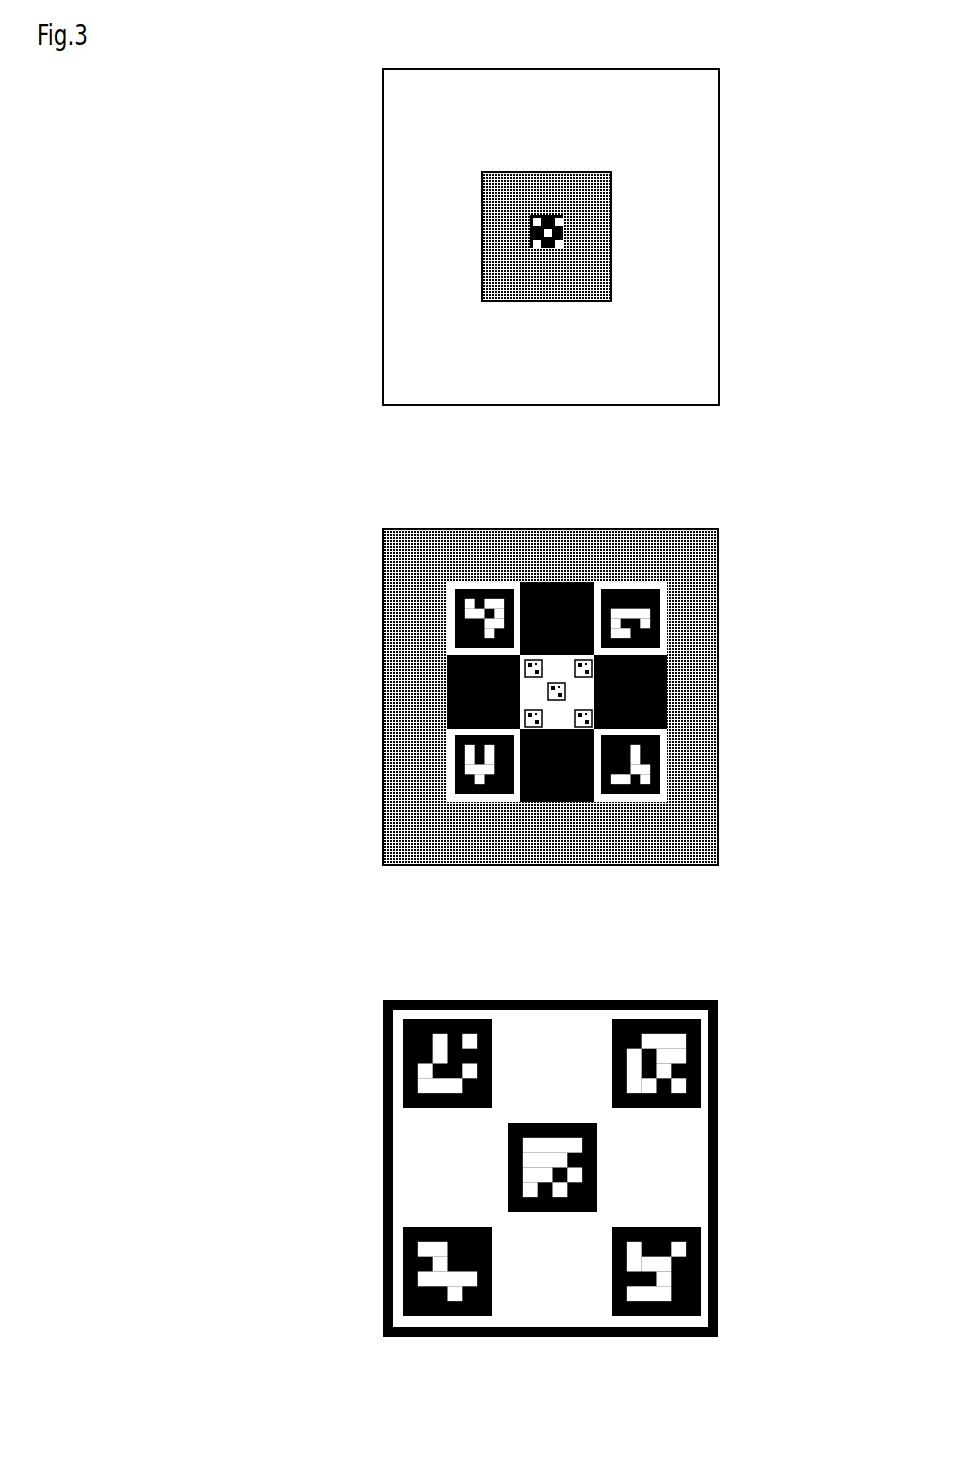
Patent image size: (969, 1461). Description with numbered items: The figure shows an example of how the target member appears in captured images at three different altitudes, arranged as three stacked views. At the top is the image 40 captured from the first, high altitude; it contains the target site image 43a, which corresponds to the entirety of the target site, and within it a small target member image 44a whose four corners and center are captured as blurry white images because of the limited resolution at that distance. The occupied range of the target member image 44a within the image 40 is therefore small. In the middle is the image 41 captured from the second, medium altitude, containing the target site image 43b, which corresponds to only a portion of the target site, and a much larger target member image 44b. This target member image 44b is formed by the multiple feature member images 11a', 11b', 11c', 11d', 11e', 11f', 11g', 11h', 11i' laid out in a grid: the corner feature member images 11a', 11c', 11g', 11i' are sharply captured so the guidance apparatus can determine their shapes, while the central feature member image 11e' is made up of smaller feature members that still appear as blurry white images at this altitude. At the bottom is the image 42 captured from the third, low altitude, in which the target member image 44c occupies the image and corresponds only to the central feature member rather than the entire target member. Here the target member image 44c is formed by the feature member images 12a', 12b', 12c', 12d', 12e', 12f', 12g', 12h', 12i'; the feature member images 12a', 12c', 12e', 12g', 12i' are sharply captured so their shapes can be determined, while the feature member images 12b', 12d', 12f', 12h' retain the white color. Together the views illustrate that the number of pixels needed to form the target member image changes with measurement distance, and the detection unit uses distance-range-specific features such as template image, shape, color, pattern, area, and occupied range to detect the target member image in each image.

The image 40 is at (551, 257).
The image 41 is at (563, 892).
The image 42 is at (564, 1388).
The target site image 43a is at (508, 188).
The target site image 43b is at (403, 553).
The target member image 44a is at (529, 232).
The target member image 44b is at (428, 665).
The target member image 44c is at (428, 1162).
The feature member image 11a' is at (402, 618).
The feature member image 11b' is at (659, 596).
The feature member image 11c' is at (699, 618).
The feature member image 11d' is at (405, 659).
The feature member image 11e' is at (659, 692).
The feature member image 11f' is at (696, 691).
The feature member image 11g' is at (402, 764).
The feature member image 11h' is at (659, 787).
The feature member image 11i' is at (699, 764).
The feature member image 12a' is at (392, 1063).
The feature member image 12b' is at (552, 1037).
The feature member image 12c' is at (705, 1063).
The feature member image 12d' is at (400, 1167).
The feature member image 12e' is at (653, 1167).
The feature member image 12f' is at (697, 1167).
The feature member image 12g' is at (392, 1271).
The feature member image 12h' is at (645, 1292).
The feature member image 12i' is at (705, 1271).